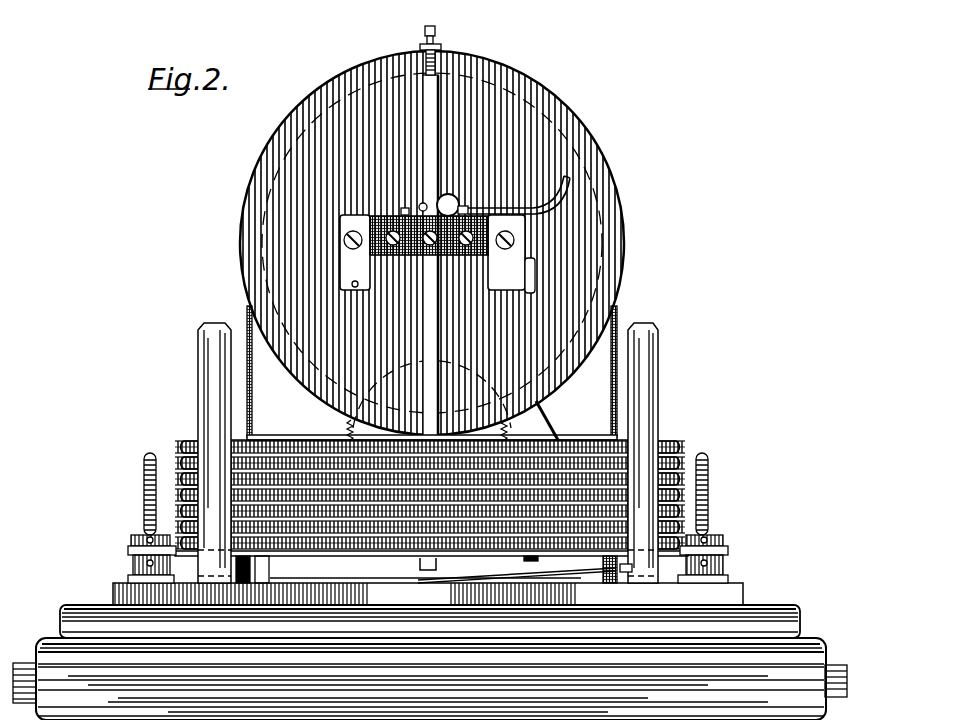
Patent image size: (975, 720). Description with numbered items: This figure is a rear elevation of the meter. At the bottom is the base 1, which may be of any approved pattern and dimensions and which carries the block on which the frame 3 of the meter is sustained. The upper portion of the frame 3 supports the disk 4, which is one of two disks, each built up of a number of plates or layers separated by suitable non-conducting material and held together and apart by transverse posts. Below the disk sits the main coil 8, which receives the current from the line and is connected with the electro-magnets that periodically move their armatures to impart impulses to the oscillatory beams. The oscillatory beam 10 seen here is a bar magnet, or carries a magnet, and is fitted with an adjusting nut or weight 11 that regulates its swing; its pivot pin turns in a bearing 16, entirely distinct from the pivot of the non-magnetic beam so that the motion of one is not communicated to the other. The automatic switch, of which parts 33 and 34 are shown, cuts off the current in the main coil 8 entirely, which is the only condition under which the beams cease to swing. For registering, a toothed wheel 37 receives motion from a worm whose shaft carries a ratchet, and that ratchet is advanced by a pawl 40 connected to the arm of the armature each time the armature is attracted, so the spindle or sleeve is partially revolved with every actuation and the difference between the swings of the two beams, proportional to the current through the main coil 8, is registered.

The base 1 is at (175, 686).
The frame 3 is at (312, 385).
The disk 4 is at (606, 240).
The main coil 8 is at (303, 447).
The oscillatory beam 10 is at (431, 150).
The adjusting nut or weight 11 is at (432, 40).
The bearing 16 is at (431, 249).
The automatic switch 33 is at (412, 552).
The automatic switch 34 is at (410, 566).
The toothed wheel 37 is at (494, 415).
The pawl 40 is at (522, 423).